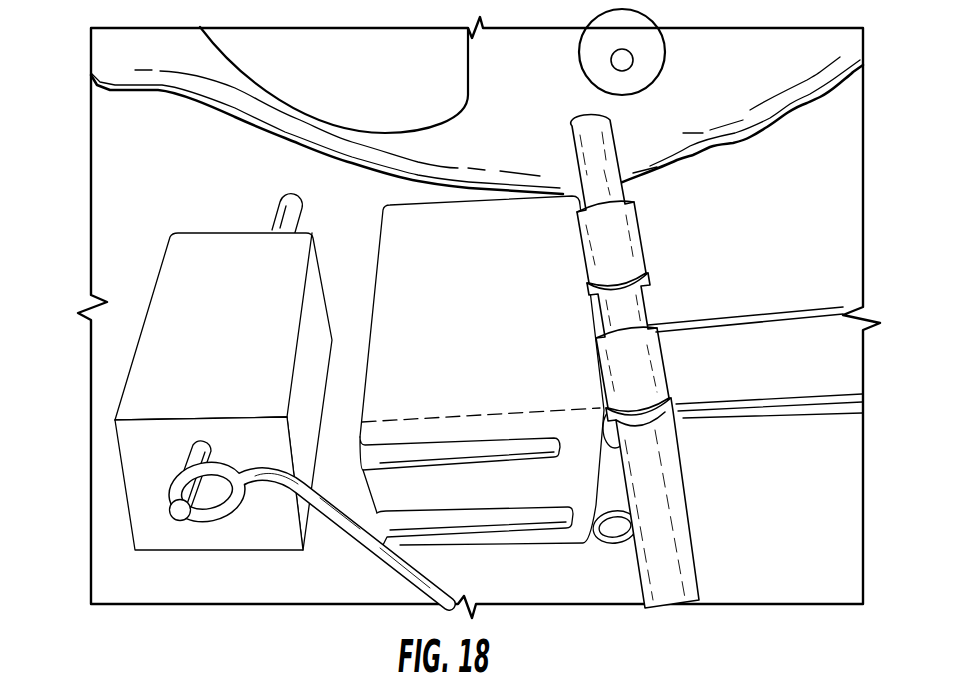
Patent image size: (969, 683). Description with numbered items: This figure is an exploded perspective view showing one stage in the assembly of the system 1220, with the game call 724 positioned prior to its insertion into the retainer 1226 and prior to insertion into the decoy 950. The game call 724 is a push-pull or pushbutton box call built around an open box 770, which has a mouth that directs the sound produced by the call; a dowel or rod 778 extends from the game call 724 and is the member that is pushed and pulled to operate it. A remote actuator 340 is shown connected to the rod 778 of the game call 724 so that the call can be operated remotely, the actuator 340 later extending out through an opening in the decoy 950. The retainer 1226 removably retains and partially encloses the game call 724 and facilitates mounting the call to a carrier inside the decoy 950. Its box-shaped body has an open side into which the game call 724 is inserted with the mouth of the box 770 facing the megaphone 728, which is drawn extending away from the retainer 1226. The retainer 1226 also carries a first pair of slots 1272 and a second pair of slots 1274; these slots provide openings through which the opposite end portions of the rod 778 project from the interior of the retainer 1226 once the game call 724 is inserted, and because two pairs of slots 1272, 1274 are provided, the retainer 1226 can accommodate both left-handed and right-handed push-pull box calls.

The system 1220 is at (75, 150).
The decoy 950 is at (818, 97).
The megaphone 728 is at (827, 316).
The open box 770 is at (140, 336).
The game call 724 is at (125, 494).
The rod 778 is at (173, 513).
The remote actuator 340 is at (363, 533).
The first pair of slots 1272 is at (413, 440).
The second pair of slots 1274 is at (418, 513).
The retainer 1226 is at (517, 548).